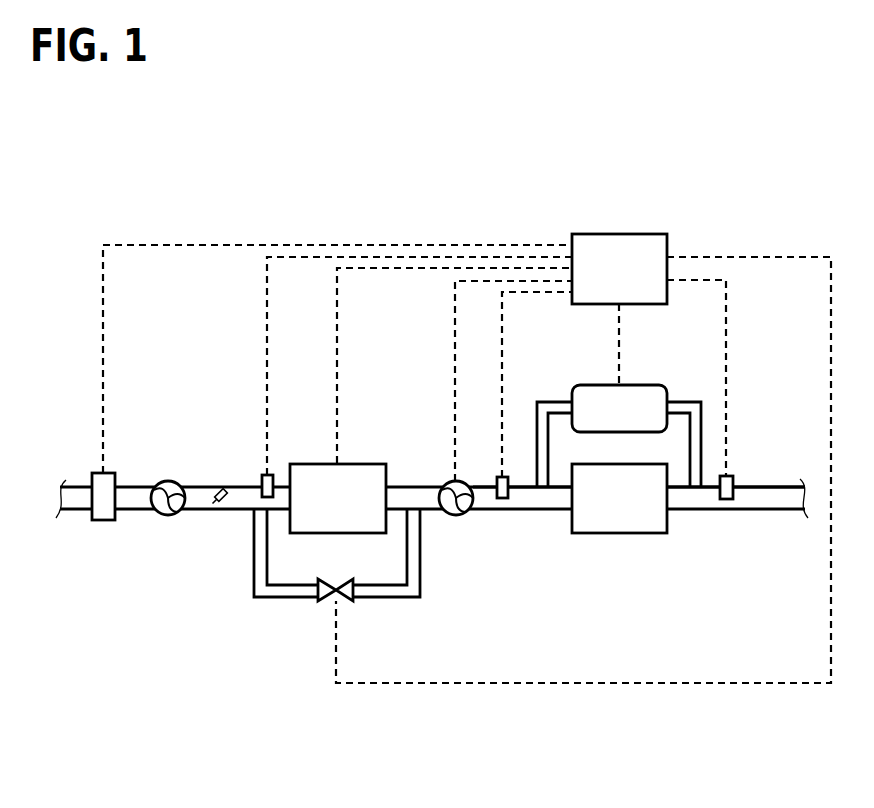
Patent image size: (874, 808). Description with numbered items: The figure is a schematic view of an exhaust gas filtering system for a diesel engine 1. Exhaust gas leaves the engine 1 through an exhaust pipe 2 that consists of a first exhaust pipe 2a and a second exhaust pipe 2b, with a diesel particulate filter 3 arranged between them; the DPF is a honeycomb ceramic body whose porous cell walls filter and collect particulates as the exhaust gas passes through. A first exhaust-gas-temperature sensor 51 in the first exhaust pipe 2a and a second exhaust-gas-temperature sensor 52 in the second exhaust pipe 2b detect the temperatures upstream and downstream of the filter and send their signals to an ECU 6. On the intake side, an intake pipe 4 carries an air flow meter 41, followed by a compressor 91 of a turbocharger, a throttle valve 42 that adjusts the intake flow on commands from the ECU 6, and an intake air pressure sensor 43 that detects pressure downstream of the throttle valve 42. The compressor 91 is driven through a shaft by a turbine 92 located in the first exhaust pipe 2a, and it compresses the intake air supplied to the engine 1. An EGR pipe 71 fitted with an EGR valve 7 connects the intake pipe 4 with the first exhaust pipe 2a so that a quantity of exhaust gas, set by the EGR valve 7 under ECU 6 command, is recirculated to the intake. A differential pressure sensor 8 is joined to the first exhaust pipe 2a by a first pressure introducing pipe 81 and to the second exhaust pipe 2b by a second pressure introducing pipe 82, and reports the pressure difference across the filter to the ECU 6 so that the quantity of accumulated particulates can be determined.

The engine 1 is at (358, 463).
The exhaust pipe 2 is at (773, 513).
The first exhaust pipe 2a is at (478, 487).
The second exhaust pipe 2b is at (762, 487).
The diesel particulate filter 3 is at (617, 534).
The intake pipe 4 is at (139, 478).
The air flow meter 41 is at (103, 521).
The throttle valve 42 is at (222, 486).
The intake air pressure sensor 43 is at (270, 475).
The first exhaust-gas-temperature sensor 51 is at (503, 499).
The second exhaust-gas-temperature sensor 52 is at (727, 500).
The ECU 6 is at (617, 234).
The EGR valve 7 is at (328, 602).
The EGR pipe 71 is at (400, 600).
The differential pressure sensor 8 is at (594, 385).
The first pressure introducing pipe 81 is at (548, 400).
The second pressure introducing pipe 82 is at (690, 400).
The compressor 91 is at (168, 515).
The turbine 92 is at (456, 515).